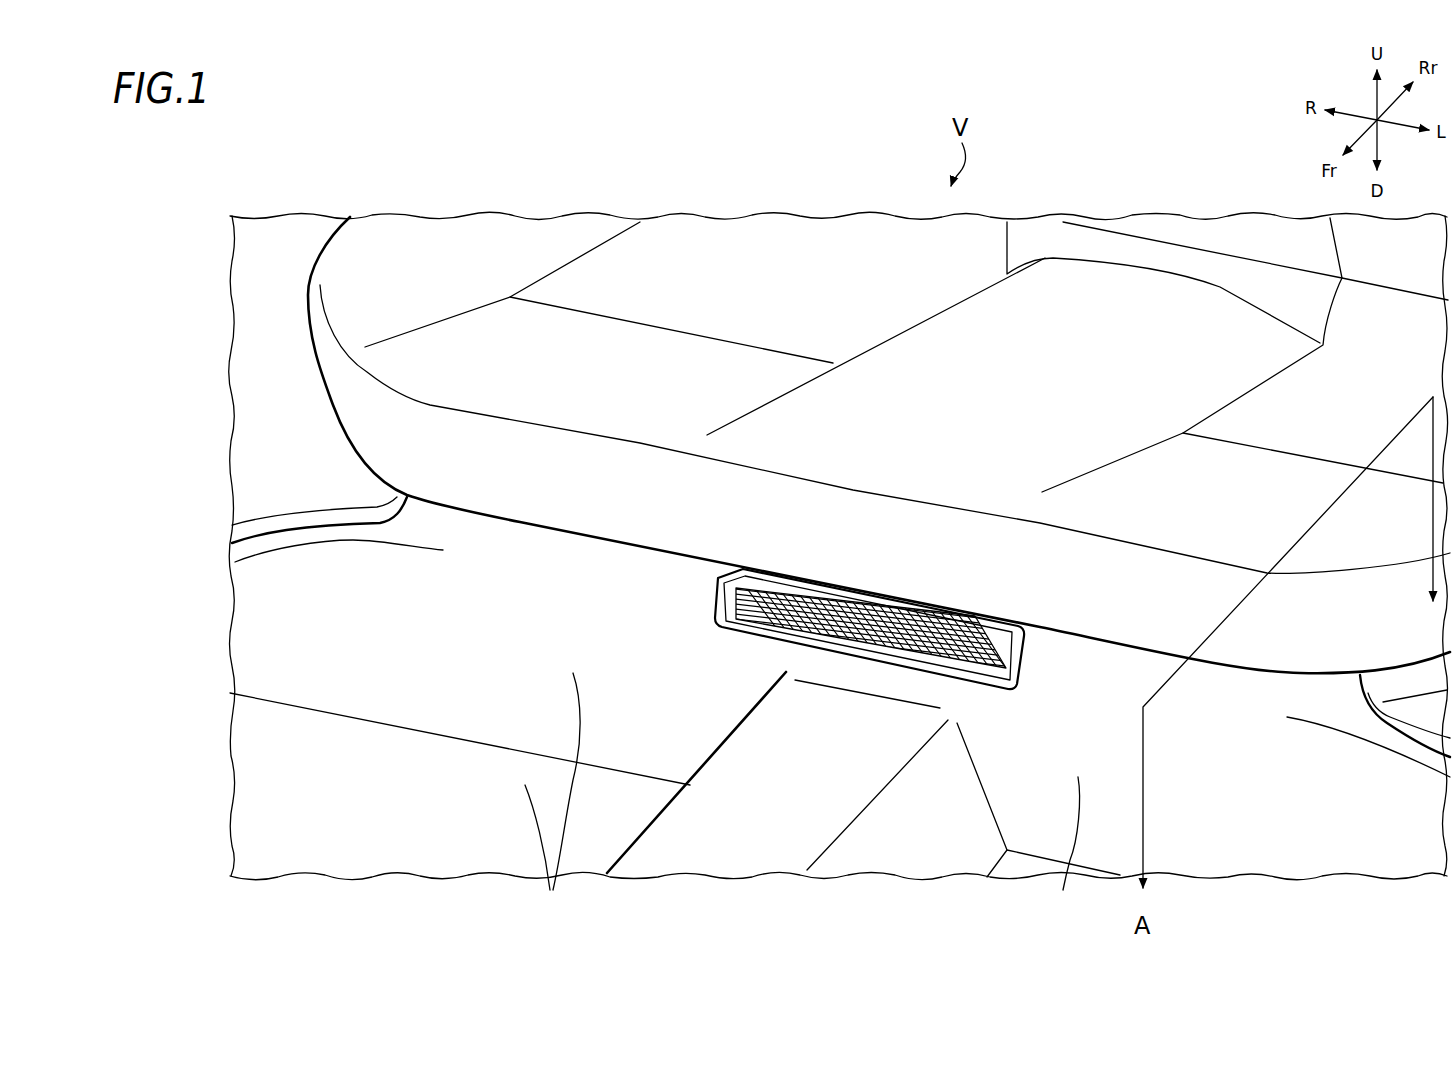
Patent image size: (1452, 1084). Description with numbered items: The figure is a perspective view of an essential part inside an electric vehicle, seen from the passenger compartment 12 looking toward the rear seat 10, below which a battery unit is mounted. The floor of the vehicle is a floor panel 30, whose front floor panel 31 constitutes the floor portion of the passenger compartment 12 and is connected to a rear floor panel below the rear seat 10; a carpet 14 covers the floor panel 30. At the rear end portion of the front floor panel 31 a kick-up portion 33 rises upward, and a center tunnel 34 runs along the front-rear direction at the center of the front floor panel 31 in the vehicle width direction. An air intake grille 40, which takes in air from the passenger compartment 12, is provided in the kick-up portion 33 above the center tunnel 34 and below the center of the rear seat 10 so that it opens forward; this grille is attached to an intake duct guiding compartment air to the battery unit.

The rear seat 10 is at (763, 273).
The passenger compartment 12 is at (325, 694).
The carpet 14 is at (552, 806).
The floor panel 30 is at (451, 951).
The front floor panel 31 is at (447, 830).
The kick-up portion 33 is at (1038, 831).
The center tunnel 34 is at (750, 830).
The air intake grille 40 is at (887, 667).